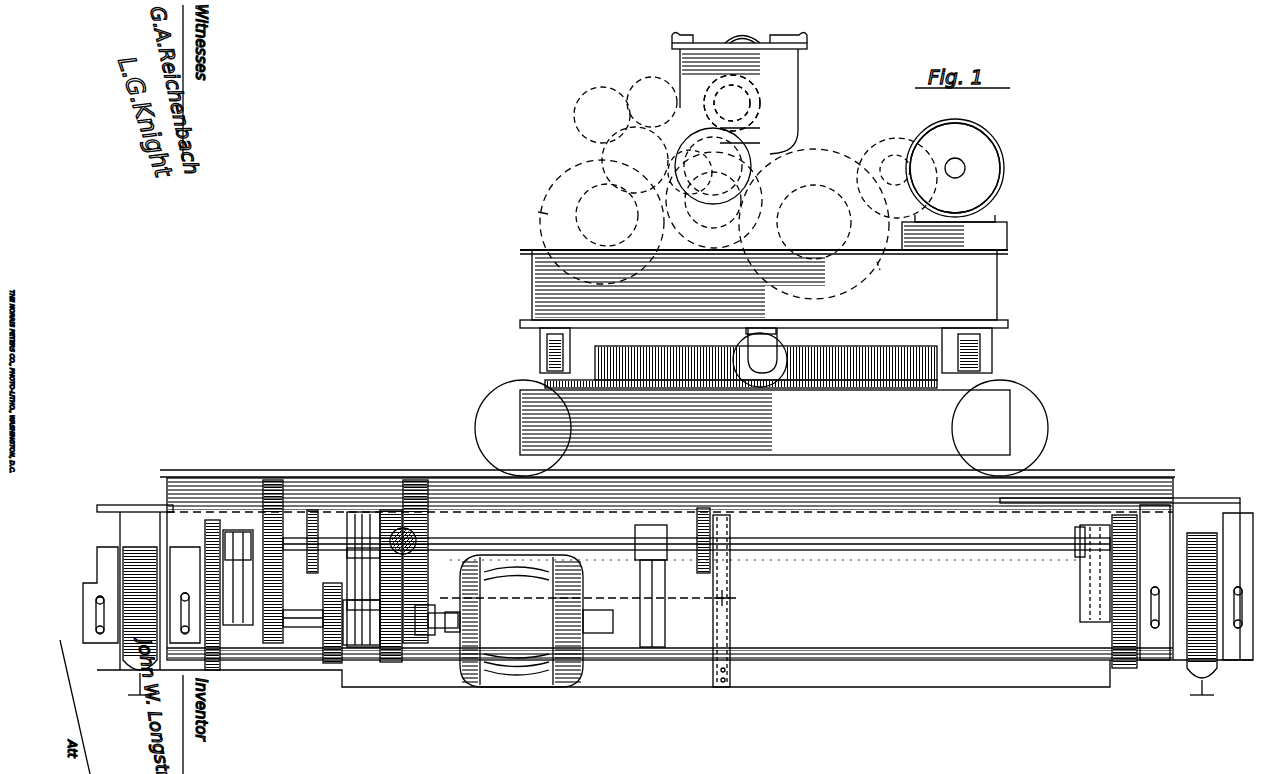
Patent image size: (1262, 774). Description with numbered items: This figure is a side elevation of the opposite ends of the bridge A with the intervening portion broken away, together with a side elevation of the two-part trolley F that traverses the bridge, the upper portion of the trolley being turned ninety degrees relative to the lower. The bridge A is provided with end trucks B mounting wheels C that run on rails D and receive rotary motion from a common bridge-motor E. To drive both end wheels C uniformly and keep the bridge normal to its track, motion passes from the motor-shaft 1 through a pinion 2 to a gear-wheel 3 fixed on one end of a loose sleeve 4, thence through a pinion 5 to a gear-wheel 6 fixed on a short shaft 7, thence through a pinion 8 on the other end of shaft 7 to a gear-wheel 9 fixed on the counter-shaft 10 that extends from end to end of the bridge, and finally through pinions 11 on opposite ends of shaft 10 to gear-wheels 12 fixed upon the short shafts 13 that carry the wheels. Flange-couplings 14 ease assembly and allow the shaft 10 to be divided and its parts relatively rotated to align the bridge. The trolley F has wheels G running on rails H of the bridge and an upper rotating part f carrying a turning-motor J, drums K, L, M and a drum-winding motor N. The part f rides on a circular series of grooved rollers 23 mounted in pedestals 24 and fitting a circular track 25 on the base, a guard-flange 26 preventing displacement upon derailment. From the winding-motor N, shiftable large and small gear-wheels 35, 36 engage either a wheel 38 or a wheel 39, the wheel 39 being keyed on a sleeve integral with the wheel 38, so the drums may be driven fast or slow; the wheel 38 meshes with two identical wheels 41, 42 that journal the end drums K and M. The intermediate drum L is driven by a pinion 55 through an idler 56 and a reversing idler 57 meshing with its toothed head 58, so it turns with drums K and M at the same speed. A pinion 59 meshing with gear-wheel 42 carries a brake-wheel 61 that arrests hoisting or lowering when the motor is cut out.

The motor-shaft 1 is at (450, 622).
The pinion 2 is at (420, 645).
The gear-wheel 3 is at (415, 480).
The loose sleeve 4 is at (408, 530).
The pinion 5 is at (392, 512).
The gear-wheel 6 is at (392, 662).
The short shaft 7 is at (305, 622).
The pinion 8 is at (278, 645).
The gear-wheel 9 is at (273, 490).
The counter-shaft 10 is at (253, 530).
The pinions 11 is at (212, 523).
The gear-wheels 12 is at (214, 670).
The short shafts 13 is at (160, 545).
The flange-couplings 14 is at (313, 512).
The grooved rollers 23 is at (553, 360).
The pedestals 24 is at (546, 340).
The circular track 25 is at (545, 388).
The guard-flange 26 is at (735, 375).
The large gear-wheel 35 is at (753, 85).
The small gear-wheel 36 is at (752, 107).
The gear-wheel 38 is at (743, 144).
The gear-wheel 39 is at (750, 135).
The gear-wheel 41 is at (540, 212).
The gear-wheel 42 is at (878, 262).
The pinion 55 is at (614, 76).
The idler pinion 56 is at (672, 70).
The second idler 57 is at (633, 136).
The toothed head 58 is at (667, 172).
The pinion 59 is at (883, 160).
The brake-wheel 61 is at (907, 130).
The bridge A is at (670, 582).
The end trucks B is at (108, 557).
The wheels C is at (1215, 668).
The rails D is at (148, 672).
The bridge-motor E is at (529, 621).
The trolley F is at (765, 422).
The wheels G is at (761, 428).
The rails H is at (357, 512).
The turning-motor J is at (954, 184).
The drum K is at (602, 222).
The drum L is at (714, 188).
The drum M is at (814, 224).
The drum-winding motor N is at (739, 94).
The upper rotating part f is at (764, 289).